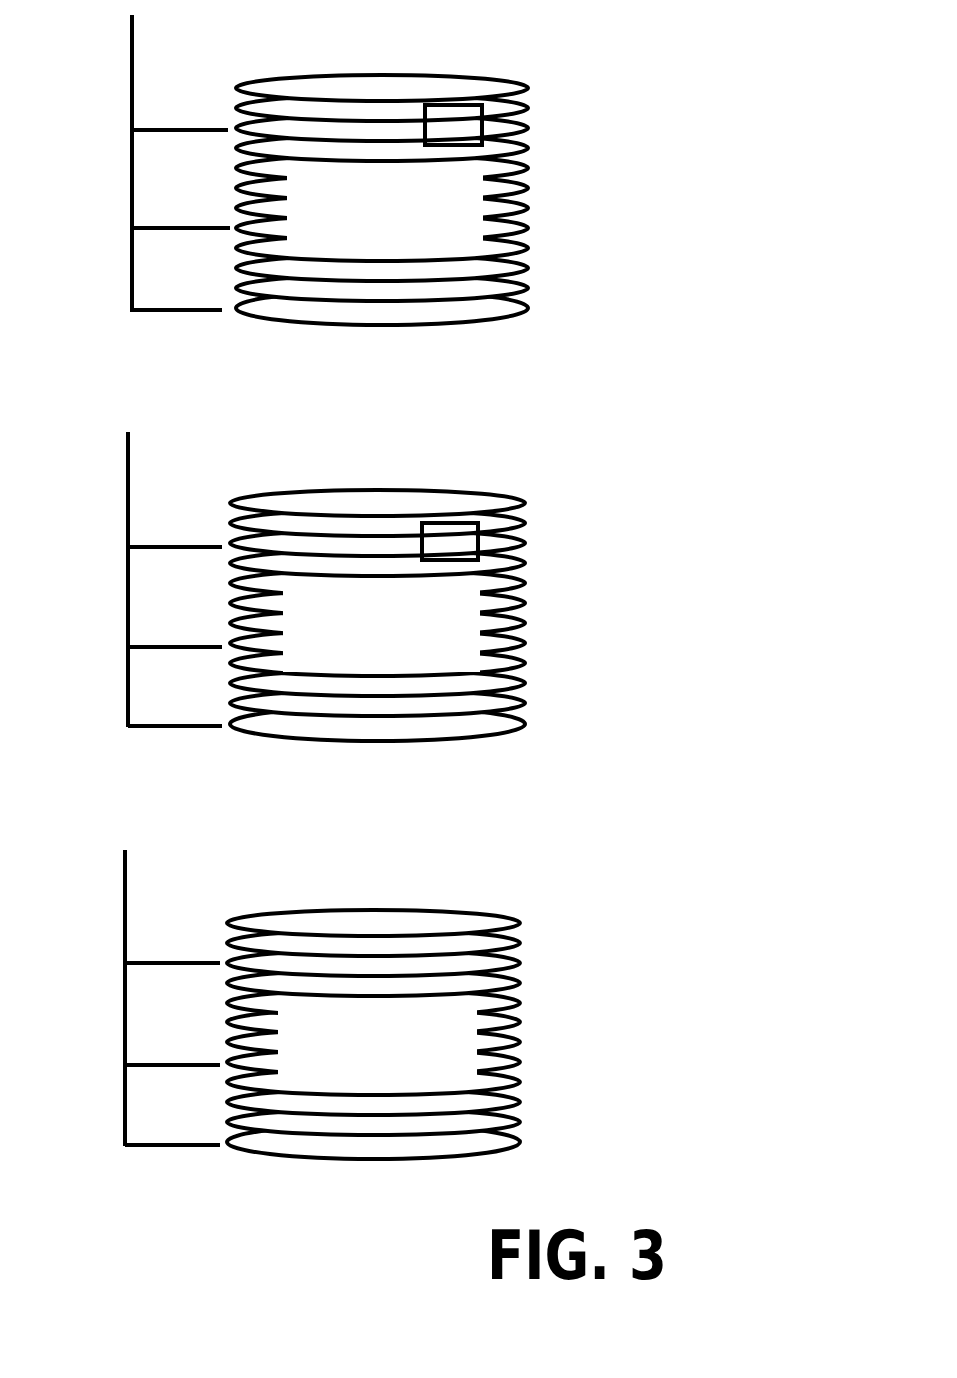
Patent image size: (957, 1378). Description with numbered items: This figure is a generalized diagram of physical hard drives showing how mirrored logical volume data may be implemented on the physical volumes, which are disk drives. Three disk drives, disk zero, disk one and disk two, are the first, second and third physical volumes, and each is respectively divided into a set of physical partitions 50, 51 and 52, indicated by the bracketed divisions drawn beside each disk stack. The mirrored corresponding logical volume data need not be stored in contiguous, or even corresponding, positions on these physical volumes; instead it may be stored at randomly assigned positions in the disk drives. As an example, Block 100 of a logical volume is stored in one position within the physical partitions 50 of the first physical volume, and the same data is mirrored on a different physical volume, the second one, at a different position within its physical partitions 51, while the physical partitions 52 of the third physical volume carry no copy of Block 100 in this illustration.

The set of physical partitions 50 is at (131, 213).
The set of physical partitions 51 is at (127, 630).
The set of physical partitions 52 is at (124, 1047).
The block 100 is at (453, 113).